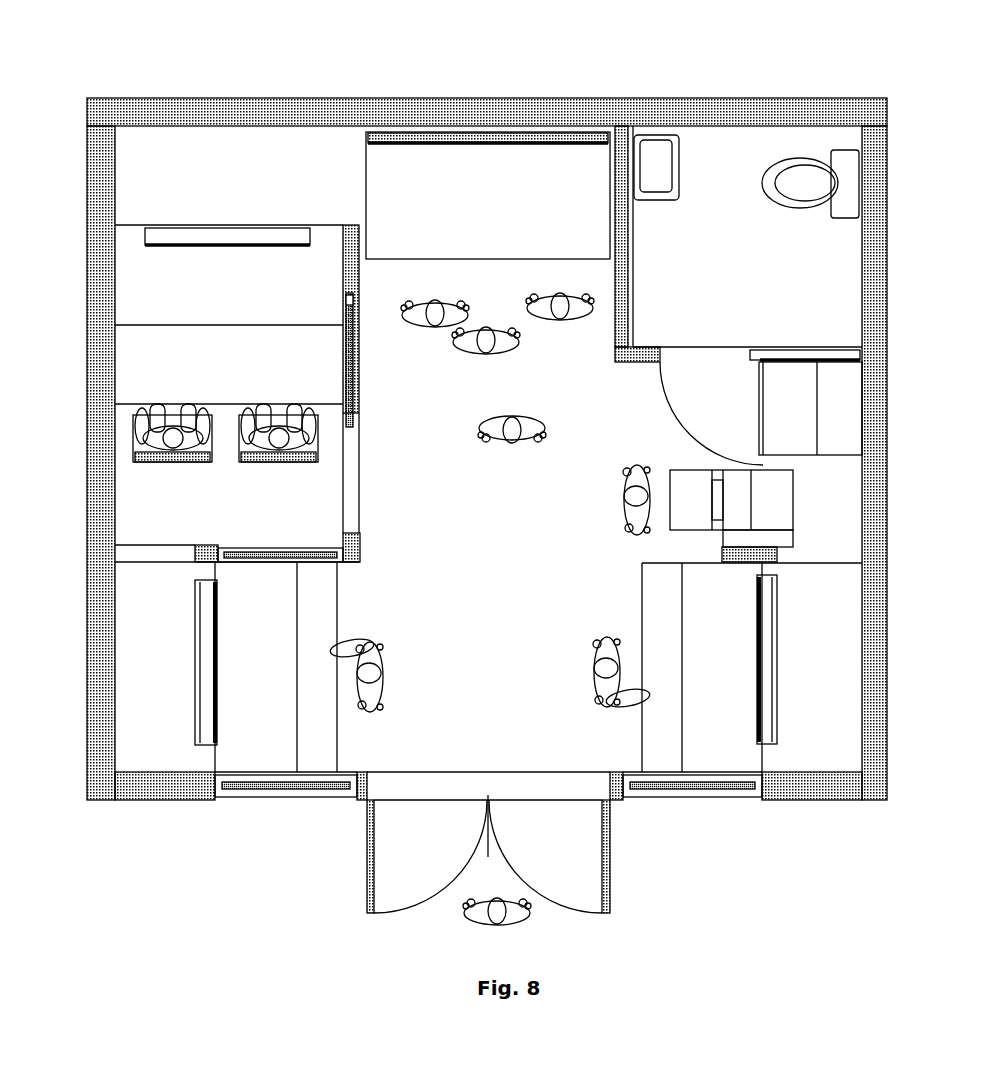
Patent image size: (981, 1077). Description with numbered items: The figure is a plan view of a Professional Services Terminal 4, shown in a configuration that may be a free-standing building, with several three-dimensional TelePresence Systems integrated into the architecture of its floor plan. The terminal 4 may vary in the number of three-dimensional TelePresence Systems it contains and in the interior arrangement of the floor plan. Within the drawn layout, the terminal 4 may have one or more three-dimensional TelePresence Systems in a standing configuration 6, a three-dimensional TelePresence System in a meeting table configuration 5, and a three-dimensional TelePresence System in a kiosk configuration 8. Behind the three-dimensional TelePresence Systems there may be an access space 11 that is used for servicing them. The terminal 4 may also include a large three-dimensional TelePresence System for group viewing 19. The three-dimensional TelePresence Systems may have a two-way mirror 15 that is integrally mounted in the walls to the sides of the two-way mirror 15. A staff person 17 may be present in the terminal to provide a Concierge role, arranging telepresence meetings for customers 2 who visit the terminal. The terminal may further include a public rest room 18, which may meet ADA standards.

The Professional Services Terminal 4 is at (386, 98).
The 3D TelePresence System in a meeting table configuration 5 is at (265, 240).
The access space 11 is at (295, 190).
The two-way mirror 15 is at (150, 290).
The large 3D TelePresence System for group viewing 19 is at (505, 145).
The public rest room 18 is at (773, 237).
The 3D TelePresence System in a kiosk configuration 8 is at (690, 487).
The staff person 17 is at (508, 440).
The 3D TelePresence System in a standing configuration 6 is at (215, 660).
The customer 2 is at (392, 665).